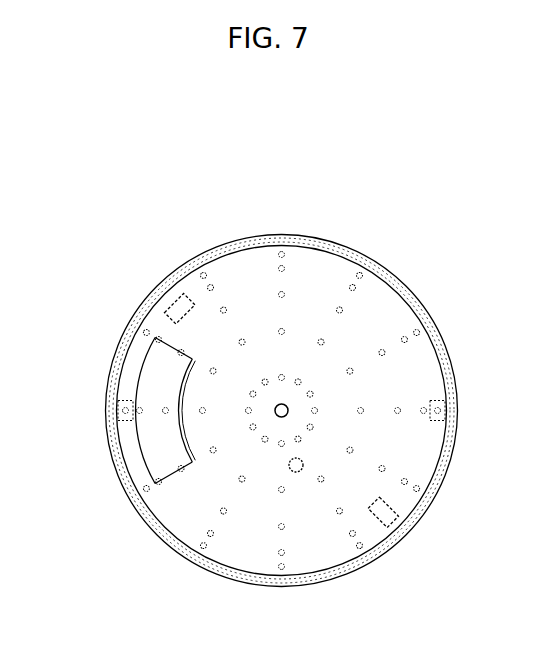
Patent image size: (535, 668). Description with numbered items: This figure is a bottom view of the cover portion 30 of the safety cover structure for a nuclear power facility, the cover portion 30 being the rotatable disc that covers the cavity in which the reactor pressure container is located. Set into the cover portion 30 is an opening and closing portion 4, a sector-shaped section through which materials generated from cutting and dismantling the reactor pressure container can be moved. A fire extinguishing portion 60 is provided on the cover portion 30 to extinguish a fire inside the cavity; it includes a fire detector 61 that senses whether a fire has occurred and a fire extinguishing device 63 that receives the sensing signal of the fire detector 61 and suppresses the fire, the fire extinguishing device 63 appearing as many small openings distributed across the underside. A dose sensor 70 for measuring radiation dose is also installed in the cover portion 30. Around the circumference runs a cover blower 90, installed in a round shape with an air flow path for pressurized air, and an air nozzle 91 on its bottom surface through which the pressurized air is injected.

The opening and closing portion 4 is at (157, 438).
The cover portion 30 is at (255, 540).
The fire extinguishing portion 60 is at (304, 385).
The fire detector 61 is at (172, 298).
The fire extinguishing device 63 is at (206, 275).
The dose sensor 70 is at (297, 473).
The cover blower 90 is at (153, 533).
The air nozzle 91 is at (133, 512).